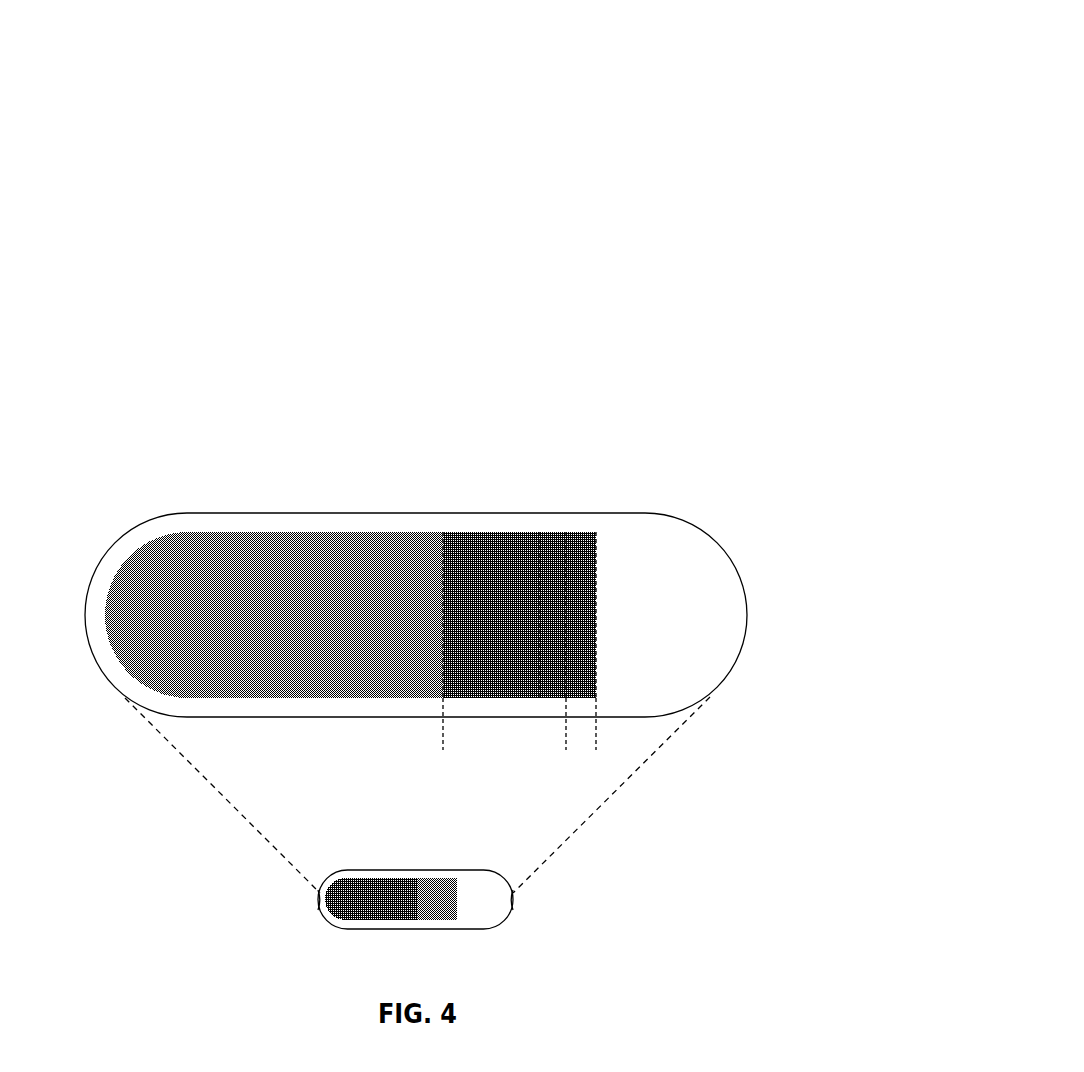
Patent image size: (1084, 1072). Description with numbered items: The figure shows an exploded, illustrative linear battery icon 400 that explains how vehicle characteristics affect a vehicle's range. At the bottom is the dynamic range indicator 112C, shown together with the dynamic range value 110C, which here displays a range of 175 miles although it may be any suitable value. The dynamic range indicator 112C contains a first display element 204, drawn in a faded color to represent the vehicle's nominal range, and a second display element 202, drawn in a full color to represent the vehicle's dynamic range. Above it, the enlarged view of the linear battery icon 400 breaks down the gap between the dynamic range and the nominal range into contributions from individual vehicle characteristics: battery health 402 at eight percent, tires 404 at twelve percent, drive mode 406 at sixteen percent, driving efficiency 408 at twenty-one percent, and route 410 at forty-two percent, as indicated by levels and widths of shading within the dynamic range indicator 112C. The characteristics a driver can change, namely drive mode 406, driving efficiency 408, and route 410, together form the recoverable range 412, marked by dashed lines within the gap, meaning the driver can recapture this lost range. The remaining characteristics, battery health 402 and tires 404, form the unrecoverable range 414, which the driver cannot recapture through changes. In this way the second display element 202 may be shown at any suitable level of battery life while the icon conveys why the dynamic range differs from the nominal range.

The exploded linear battery icon 400 is at (154, 150).
The range indicator 175 is at (370, 899).
The second display element 202 is at (328, 623).
The first display element 204 is at (435, 873).
The battery health vehicle characteristic 402 is at (810, 386).
The tires vehicle characteristic 404 is at (758, 302).
The drive mode vehicle characteristic 406 is at (553, 525).
The driving efficiency vehicle characteristic 408 is at (524, 525).
The route vehicle characteristic 410 is at (476, 525).
The recoverable range 412 is at (566, 750).
The unrecoverable range 414 is at (596, 750).
The dynamic range value 110C is at (258, 917).
The dynamic range indicator 112C is at (513, 900).